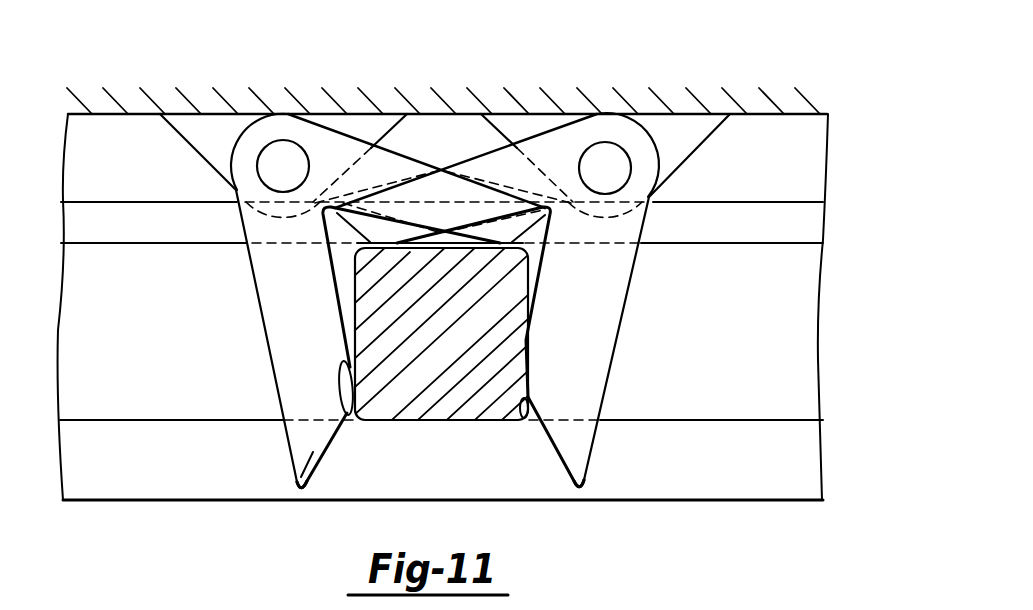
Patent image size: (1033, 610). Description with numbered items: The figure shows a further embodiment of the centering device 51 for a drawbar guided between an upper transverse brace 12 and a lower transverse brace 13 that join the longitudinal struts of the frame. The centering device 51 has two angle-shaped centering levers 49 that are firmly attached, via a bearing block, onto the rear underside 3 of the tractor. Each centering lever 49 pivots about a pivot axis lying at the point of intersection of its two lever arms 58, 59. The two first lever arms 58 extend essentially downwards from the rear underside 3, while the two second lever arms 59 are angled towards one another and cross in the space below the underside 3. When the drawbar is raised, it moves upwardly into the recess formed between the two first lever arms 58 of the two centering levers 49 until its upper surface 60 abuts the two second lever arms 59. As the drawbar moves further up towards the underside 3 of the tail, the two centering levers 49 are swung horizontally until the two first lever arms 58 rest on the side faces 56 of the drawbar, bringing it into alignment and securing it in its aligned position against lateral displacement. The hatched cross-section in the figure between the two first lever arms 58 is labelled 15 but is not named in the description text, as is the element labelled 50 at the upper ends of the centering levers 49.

The rear underside 3 is at (771, 114).
The upper transverse brace 12 is at (767, 236).
The lower transverse brace 13 is at (782, 455).
The elastomeric pad 15 is at (487, 390).
The centering lever 49 is at (296, 494).
The pivot boss 50 is at (285, 152).
The centering device 51 is at (143, 517).
The side face 56 is at (348, 418).
The first lever arm 58 is at (288, 348).
The second lever arm 59 is at (372, 148).
The upper surface 60 is at (442, 232).